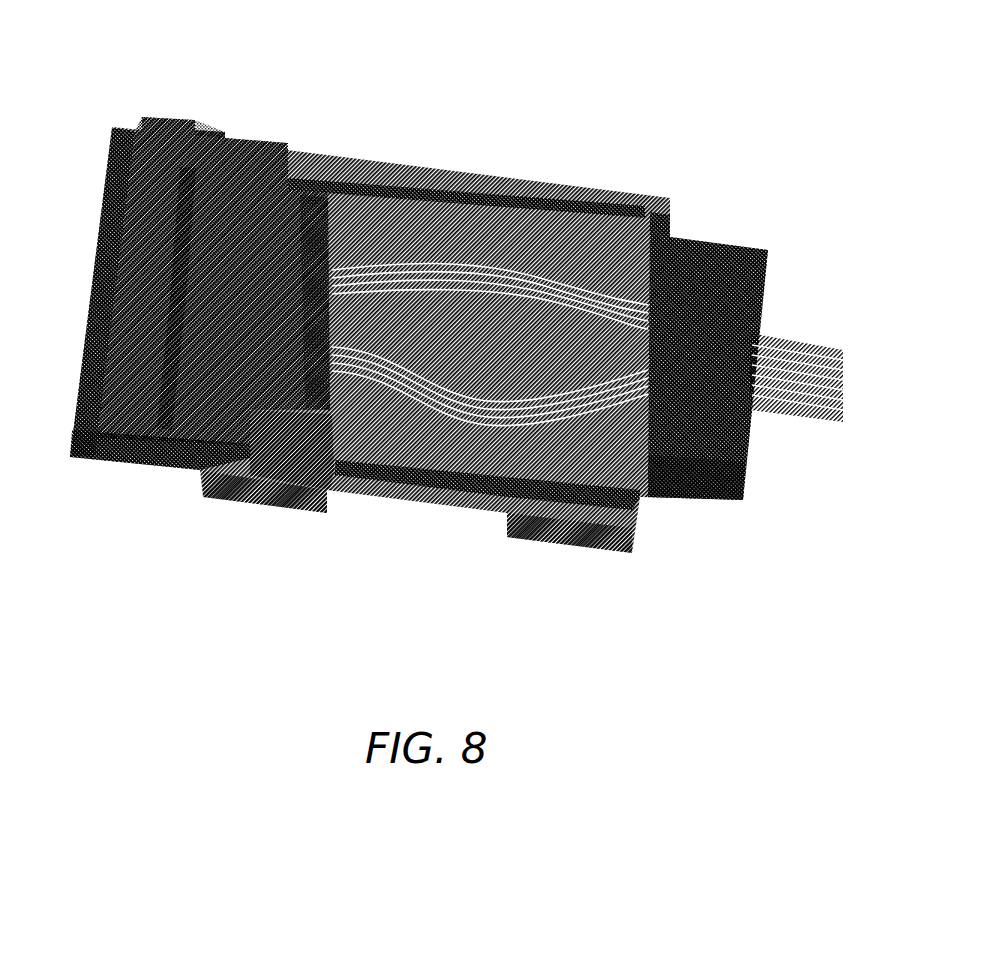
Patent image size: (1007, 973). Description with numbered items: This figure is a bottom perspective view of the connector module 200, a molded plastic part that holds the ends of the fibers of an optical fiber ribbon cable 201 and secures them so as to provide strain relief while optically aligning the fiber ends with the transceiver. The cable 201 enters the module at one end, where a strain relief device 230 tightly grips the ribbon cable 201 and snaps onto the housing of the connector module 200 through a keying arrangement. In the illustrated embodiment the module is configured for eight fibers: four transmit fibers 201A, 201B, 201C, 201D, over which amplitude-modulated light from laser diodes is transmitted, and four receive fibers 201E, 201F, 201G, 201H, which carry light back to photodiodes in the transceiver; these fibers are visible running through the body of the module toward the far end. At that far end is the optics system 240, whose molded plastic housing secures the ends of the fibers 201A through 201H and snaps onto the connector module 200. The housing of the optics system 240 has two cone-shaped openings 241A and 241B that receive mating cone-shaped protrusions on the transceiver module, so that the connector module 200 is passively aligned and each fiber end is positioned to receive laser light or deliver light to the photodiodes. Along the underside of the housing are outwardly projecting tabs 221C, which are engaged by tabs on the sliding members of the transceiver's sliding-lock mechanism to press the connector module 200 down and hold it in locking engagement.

The connector module 200 is at (596, 262).
The optical fiber ribbon cable 201 is at (802, 432).
The transmit fiber 201A is at (450, 358).
The transmit fiber 201B is at (480, 400).
The transmit fiber 201C is at (427, 393).
The transmit fiber 201D is at (480, 420).
The receive fiber 201E is at (447, 298).
The receive fiber 201F is at (536, 294).
The receive fiber 201G is at (448, 256).
The receive fiber 201H is at (520, 247).
The outwardly projecting tab 221C is at (250, 492).
The strain relief device 230 is at (732, 258).
The optics system 240 is at (245, 192).
The cone-shaped opening 241A is at (157, 427).
The cone-shaped opening 241B is at (199, 150).